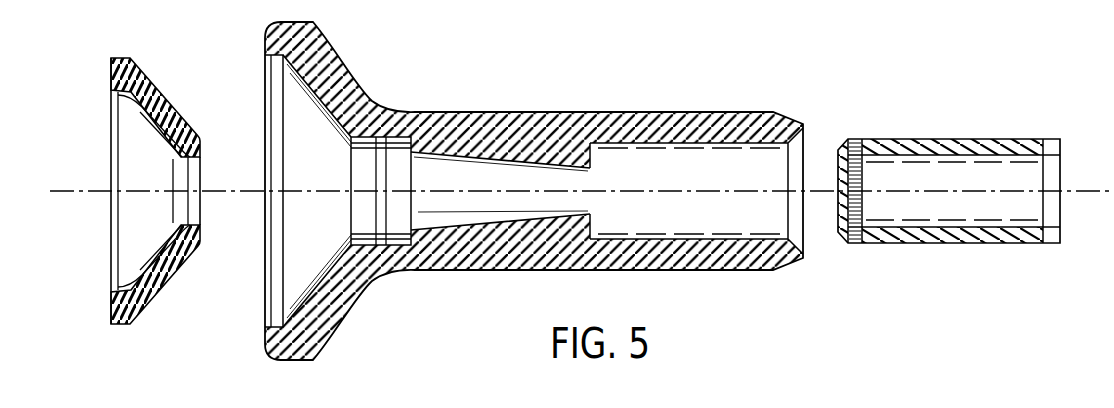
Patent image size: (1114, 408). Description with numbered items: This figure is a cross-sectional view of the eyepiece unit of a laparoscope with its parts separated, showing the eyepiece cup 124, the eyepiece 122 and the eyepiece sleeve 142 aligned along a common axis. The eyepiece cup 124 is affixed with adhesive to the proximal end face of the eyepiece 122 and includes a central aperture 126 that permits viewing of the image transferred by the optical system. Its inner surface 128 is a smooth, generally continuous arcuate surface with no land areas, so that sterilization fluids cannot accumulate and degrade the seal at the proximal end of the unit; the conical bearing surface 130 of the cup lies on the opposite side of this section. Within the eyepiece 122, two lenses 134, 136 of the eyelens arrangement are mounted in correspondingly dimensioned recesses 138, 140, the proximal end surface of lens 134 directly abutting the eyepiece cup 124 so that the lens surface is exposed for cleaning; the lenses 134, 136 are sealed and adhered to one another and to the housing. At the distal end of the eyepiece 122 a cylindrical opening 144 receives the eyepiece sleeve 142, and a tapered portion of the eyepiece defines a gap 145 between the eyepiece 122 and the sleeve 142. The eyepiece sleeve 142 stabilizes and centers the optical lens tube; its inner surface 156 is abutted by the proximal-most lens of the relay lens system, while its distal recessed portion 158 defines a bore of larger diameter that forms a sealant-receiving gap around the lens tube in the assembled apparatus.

The eyepiece 122 is at (560, 195).
The eyepiece cup 124 is at (134, 187).
The central aperture 126 is at (190, 208).
The inner surface 128 is at (145, 112).
The conical bearing surface of washer 130 is at (160, 288).
The lens 134 is at (385, 205).
The lens 136 is at (399, 150).
The recess 138 is at (363, 136).
The recess 140 is at (410, 270).
The eyepiece sleeve 142 is at (970, 178).
The cylindrical opening 144 is at (723, 218).
The gap 145 is at (803, 137).
The inner surface 156 is at (856, 165).
The distal recessed portion 158 is at (1050, 243).